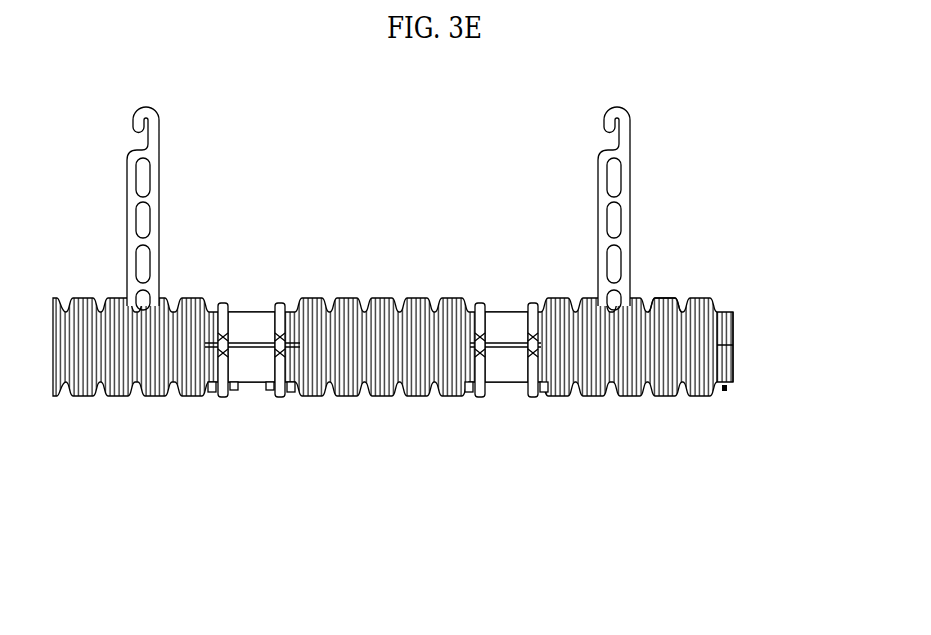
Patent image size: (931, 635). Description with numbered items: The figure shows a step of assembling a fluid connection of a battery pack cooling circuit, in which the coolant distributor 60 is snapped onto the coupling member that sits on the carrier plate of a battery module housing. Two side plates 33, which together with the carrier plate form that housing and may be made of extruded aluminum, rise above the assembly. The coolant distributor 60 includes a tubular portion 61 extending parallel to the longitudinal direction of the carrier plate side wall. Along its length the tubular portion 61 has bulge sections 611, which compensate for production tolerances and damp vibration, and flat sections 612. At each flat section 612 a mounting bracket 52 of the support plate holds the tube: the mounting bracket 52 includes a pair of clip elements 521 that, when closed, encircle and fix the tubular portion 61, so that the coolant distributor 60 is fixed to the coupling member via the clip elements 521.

The side plate 33 is at (162, 153).
The coolant distributor 60 is at (333, 262).
The tubular portion 61 is at (725, 337).
The bulge section 611 is at (663, 298).
The flat section 612 is at (505, 327).
The mounting bracket 52 is at (230, 428).
The clip element 521 is at (282, 303).